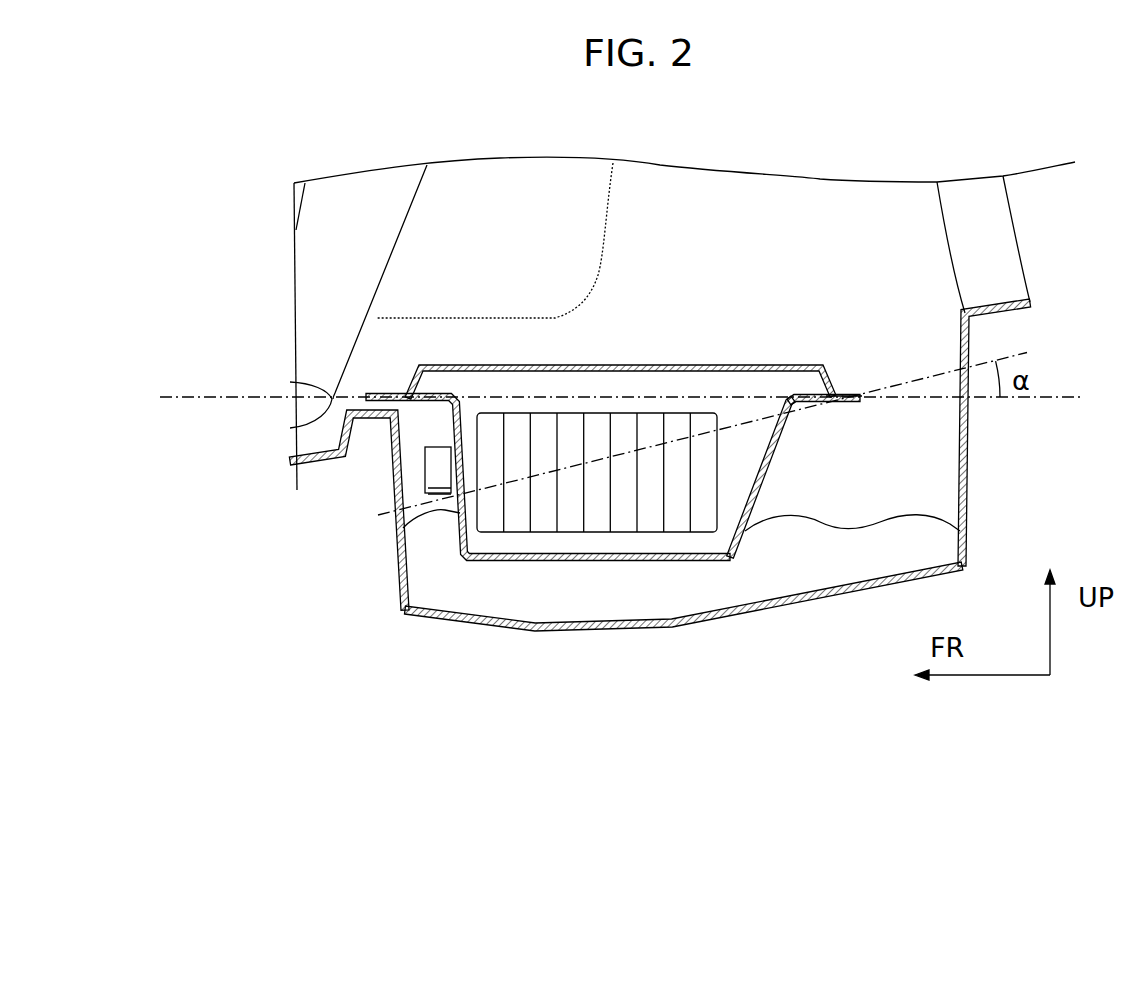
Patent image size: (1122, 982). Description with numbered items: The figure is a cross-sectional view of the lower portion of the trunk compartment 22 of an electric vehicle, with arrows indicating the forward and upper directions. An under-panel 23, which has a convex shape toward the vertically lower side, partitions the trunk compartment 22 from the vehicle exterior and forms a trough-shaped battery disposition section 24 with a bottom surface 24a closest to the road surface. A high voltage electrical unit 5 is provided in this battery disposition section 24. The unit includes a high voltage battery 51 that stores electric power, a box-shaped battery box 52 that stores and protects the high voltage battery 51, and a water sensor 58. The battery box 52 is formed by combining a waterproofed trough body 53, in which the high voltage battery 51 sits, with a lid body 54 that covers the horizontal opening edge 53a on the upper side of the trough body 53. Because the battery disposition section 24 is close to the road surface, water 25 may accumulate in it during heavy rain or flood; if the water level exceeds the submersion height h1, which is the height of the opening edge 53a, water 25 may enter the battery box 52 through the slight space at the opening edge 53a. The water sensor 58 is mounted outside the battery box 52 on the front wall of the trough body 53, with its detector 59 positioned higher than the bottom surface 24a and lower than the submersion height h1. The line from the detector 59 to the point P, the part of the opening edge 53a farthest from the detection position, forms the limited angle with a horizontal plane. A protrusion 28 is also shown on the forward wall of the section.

The trunk compartment 22 is at (697, 248).
The high voltage electrical unit 5 is at (712, 308).
The high voltage battery 51 is at (600, 422).
The battery box 52 is at (832, 477).
The trough body 53 is at (767, 490).
The opening edge 53a is at (425, 403).
The lid body 54 is at (847, 402).
The battery disposition section 24 is at (675, 492).
The bottom surface 24a is at (572, 632).
The under-panel 23 is at (969, 495).
The water 25 is at (850, 570).
The protrusion 28 is at (300, 392).
The water sensor 58 is at (438, 466).
The detector 59 is at (452, 491).
The submersion height h1 is at (238, 402).
The point P is at (828, 395).